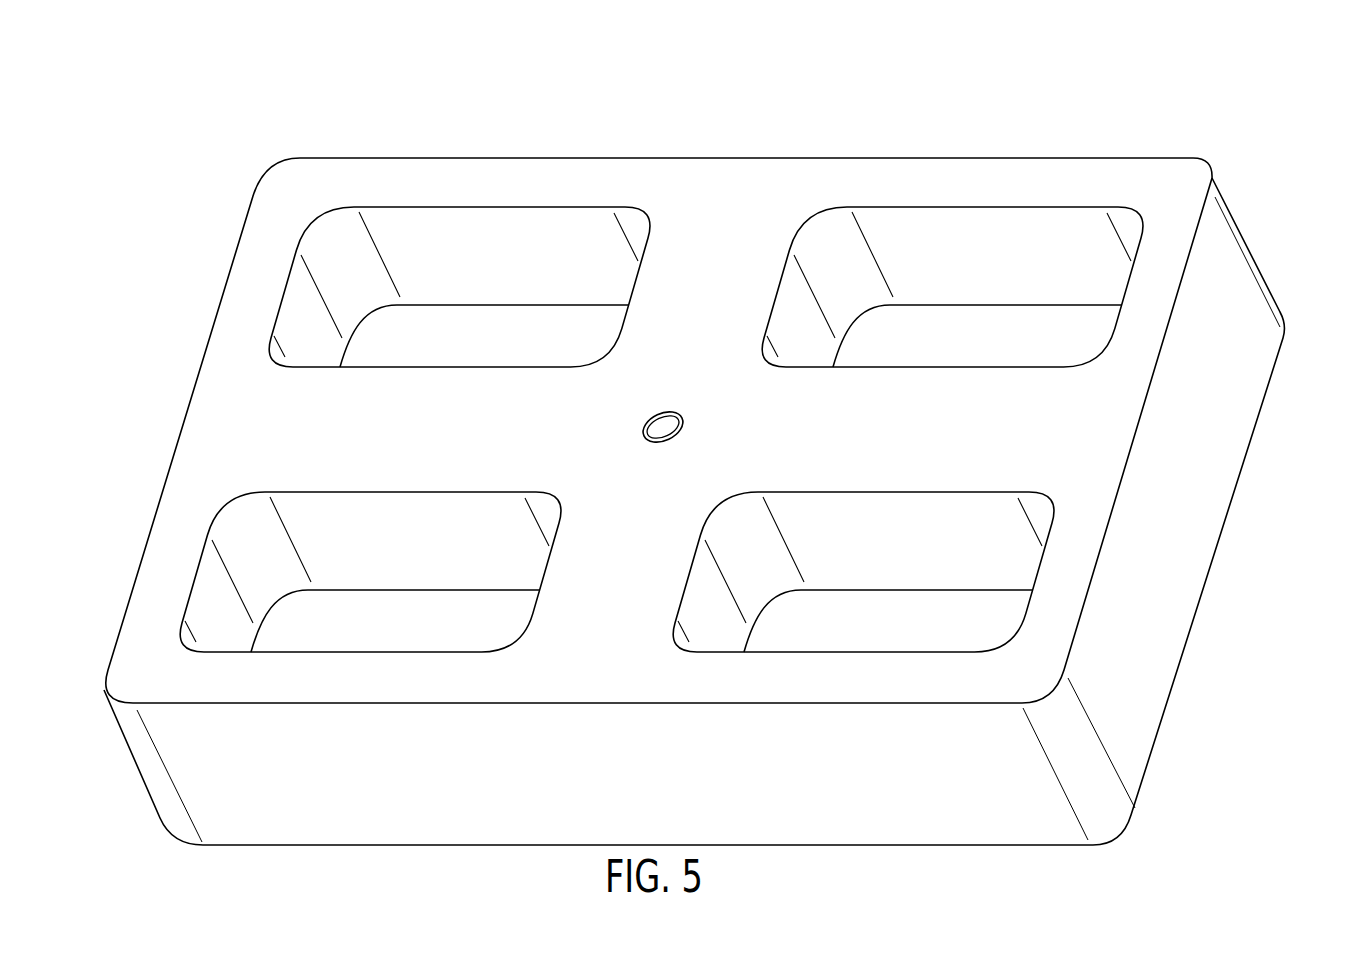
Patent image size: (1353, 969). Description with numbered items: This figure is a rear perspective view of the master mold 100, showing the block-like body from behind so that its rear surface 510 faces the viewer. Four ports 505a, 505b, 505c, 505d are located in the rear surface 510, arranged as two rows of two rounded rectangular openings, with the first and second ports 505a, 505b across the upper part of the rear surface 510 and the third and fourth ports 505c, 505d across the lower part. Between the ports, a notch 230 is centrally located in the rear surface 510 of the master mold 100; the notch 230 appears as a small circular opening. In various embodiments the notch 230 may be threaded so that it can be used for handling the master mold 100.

The master mold 100 is at (1110, 117).
The notch 230 is at (668, 413).
The port 505a is at (542, 205).
The port 505b is at (938, 205).
The port 505c is at (488, 491).
The port 505d is at (1008, 491).
The rear surface 510 is at (755, 434).